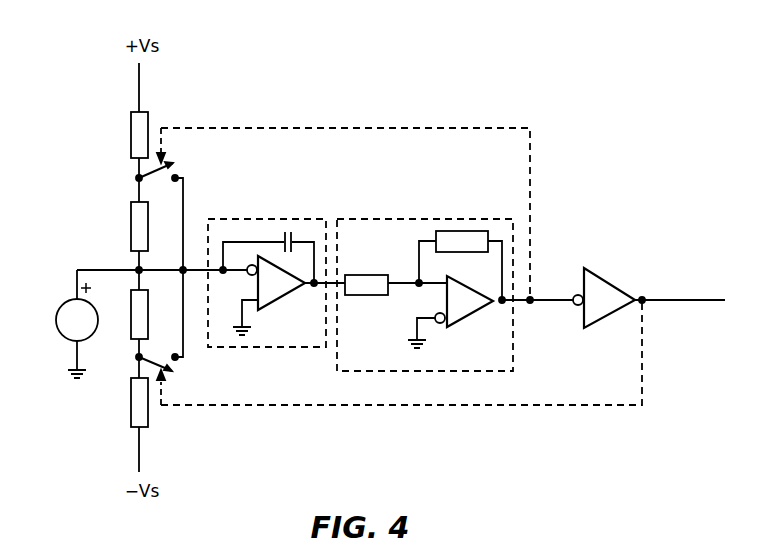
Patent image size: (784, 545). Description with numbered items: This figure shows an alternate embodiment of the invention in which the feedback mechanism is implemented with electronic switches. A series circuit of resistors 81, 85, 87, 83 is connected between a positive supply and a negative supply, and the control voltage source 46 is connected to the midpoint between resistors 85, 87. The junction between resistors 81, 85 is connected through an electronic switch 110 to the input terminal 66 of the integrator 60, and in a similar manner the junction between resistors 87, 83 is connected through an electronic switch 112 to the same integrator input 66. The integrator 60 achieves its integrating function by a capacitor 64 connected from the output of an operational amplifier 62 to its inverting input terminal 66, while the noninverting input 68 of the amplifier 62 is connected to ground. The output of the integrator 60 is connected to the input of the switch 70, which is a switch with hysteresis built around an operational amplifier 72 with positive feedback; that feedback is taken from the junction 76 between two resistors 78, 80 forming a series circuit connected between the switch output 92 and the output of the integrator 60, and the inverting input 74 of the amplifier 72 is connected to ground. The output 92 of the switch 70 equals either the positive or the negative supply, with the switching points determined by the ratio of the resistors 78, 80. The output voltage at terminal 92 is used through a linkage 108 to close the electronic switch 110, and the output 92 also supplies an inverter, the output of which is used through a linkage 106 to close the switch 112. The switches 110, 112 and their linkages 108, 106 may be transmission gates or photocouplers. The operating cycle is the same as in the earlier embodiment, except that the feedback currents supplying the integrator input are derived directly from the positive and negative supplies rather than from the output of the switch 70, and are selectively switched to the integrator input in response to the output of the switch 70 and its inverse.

The control voltage source 46 is at (54, 321).
The resistor 81 is at (131, 116).
The resistor 85 is at (131, 220).
The resistor 87 is at (132, 342).
The resistor 83 is at (126, 411).
The electronic switch 110 is at (178, 160).
The electronic switch 112 is at (178, 370).
The linkage 108 is at (326, 127).
The linkage 106 is at (421, 406).
The integrator 60 is at (276, 264).
The operational amplifier 62 is at (290, 300).
The capacitor 64 is at (272, 236).
The inverting input terminal 66 is at (239, 284).
The noninverting input 68 is at (252, 324).
The switch 70 is at (425, 279).
The operational amplifier 72 is at (478, 322).
The inverting input 74 is at (408, 324).
The junction 76 is at (438, 290).
The resistor 78 is at (464, 252).
The resistor 80 is at (372, 275).
The switch output 92 is at (535, 299).